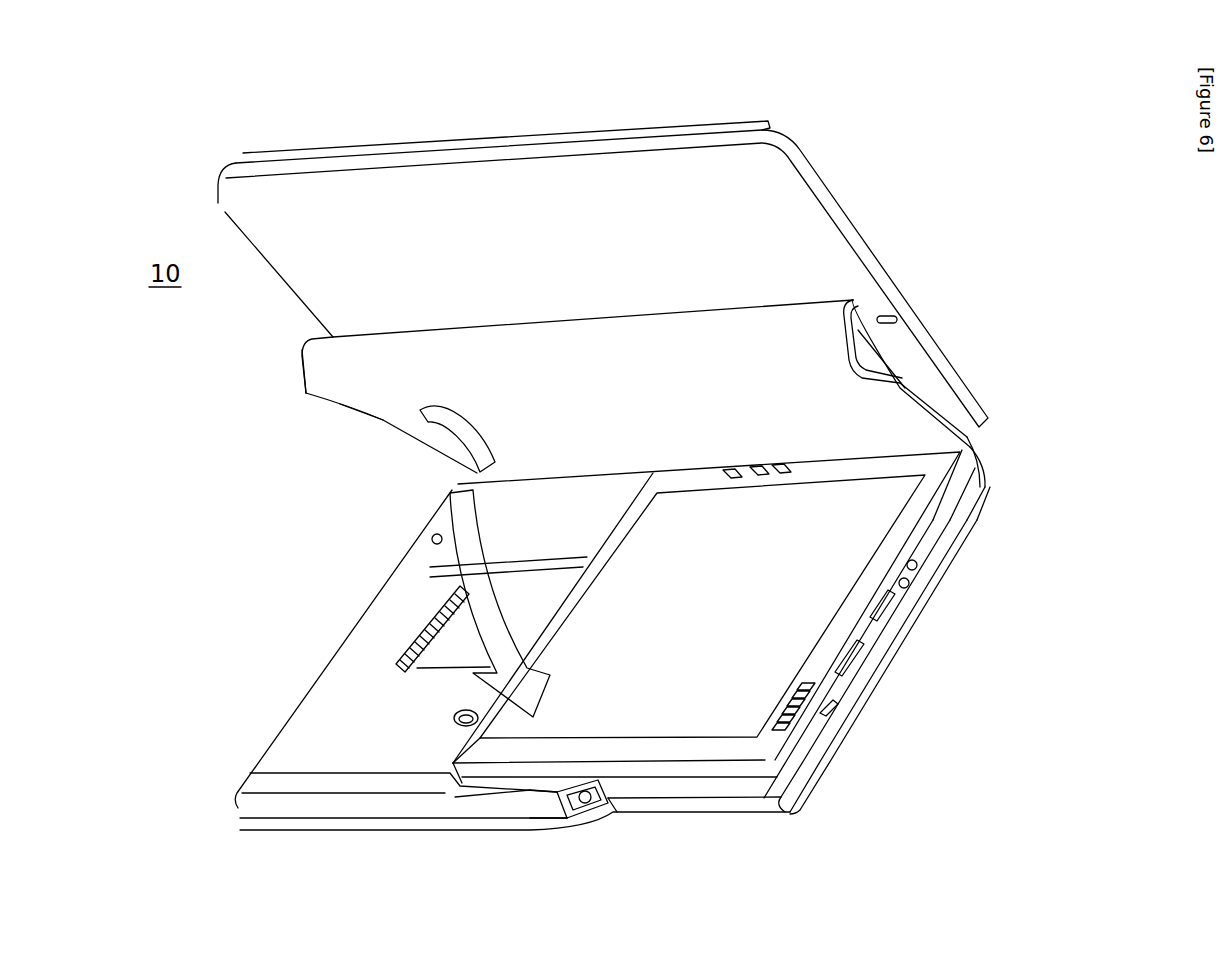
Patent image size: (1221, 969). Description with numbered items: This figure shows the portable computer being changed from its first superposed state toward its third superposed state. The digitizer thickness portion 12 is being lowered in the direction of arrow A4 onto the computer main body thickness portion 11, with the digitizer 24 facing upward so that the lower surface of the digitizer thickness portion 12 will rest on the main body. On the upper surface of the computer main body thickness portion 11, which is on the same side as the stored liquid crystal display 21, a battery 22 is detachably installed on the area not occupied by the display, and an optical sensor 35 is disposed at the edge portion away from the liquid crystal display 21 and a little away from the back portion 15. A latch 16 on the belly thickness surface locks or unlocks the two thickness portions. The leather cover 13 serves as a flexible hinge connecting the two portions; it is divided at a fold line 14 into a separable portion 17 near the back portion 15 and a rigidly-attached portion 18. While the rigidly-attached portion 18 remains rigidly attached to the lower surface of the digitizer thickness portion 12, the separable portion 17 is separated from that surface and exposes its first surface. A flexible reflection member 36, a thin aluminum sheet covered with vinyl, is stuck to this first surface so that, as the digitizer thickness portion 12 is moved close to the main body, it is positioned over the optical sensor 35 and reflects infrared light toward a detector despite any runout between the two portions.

The computer main body thickness portion 11 is at (899, 617).
The digitizer thickness portion 12 is at (828, 192).
The leather cover 13 is at (383, 432).
The fold line 14 is at (900, 320).
The back portion 15 is at (985, 467).
The latch 16 is at (583, 802).
The separable portion 17 is at (340, 388).
The rigidly-attached portion 18 is at (907, 367).
The liquid crystal display 21 is at (682, 713).
The battery 22 is at (548, 503).
The digitizer 24 is at (374, 144).
The optical sensor 35 is at (430, 535).
The flexible reflection member 36 is at (470, 427).
The arrow A4 is at (462, 578).